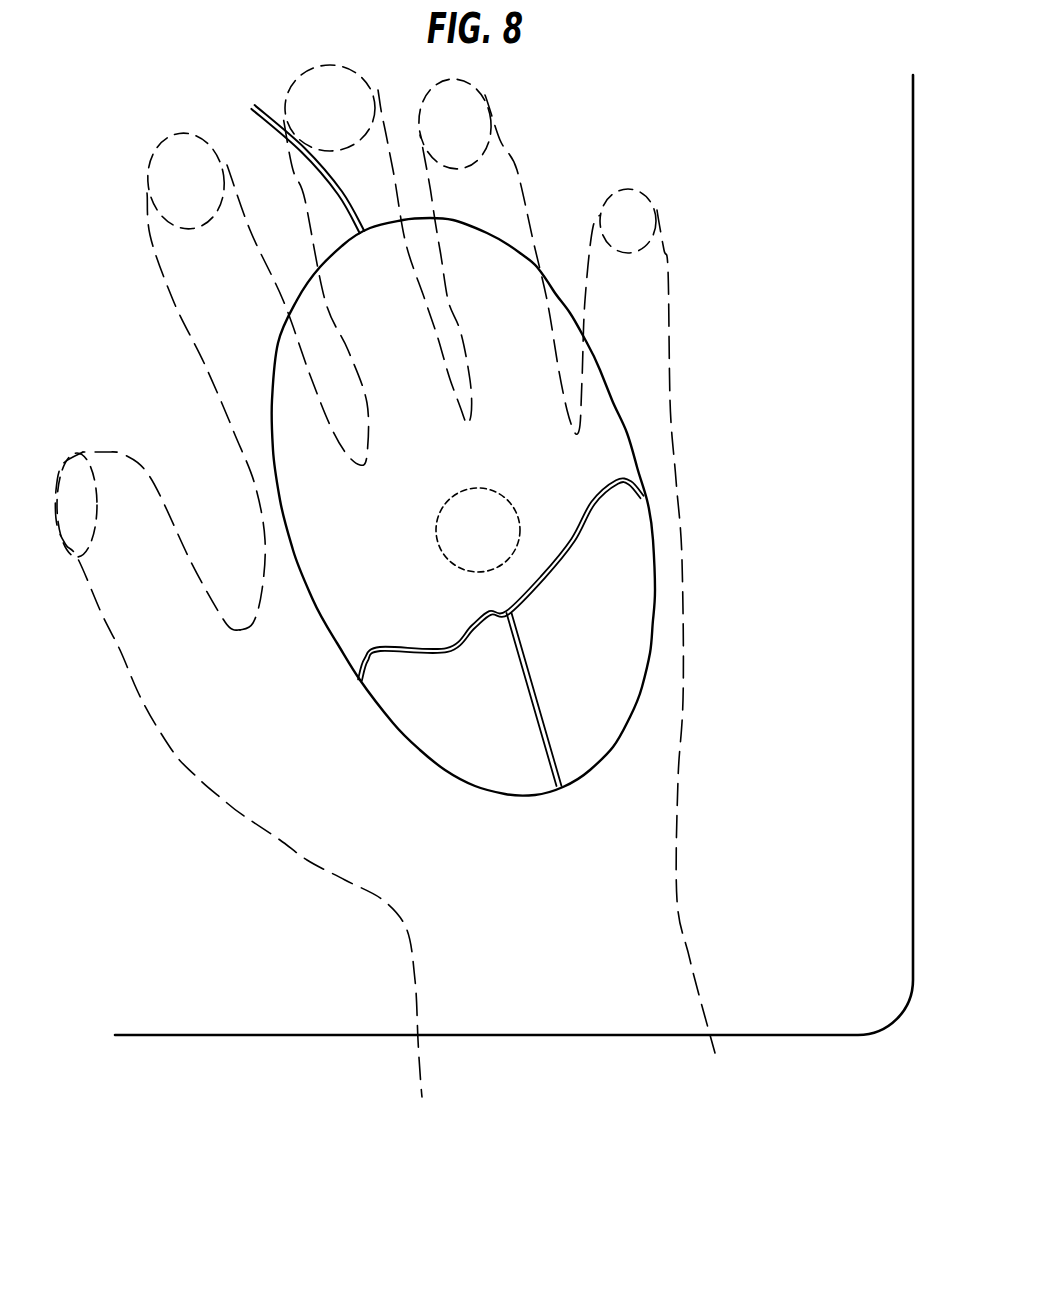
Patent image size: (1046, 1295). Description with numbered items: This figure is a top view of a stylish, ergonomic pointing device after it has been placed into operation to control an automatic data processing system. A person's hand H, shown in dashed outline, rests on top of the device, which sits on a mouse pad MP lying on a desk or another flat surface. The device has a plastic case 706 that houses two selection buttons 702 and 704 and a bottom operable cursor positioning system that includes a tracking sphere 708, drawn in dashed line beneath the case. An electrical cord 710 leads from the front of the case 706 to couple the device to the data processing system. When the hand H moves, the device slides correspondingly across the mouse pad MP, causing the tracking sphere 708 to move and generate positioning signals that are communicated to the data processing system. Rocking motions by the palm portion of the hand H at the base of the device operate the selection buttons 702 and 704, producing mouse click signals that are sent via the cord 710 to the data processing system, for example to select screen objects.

The selection button 702 is at (617, 627).
The selection button 704 is at (438, 740).
The case 706 is at (585, 332).
The tracking sphere 708 is at (522, 530).
The electrical cord 710 is at (257, 125).
The hand H is at (687, 693).
The mouse pad MP is at (822, 1007).